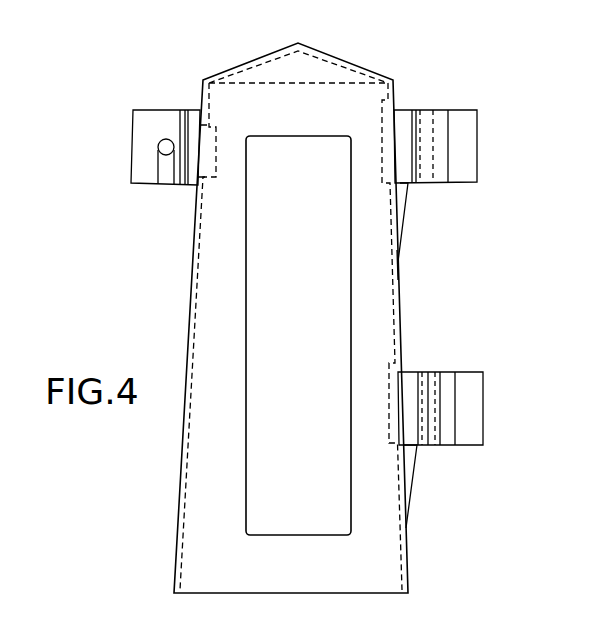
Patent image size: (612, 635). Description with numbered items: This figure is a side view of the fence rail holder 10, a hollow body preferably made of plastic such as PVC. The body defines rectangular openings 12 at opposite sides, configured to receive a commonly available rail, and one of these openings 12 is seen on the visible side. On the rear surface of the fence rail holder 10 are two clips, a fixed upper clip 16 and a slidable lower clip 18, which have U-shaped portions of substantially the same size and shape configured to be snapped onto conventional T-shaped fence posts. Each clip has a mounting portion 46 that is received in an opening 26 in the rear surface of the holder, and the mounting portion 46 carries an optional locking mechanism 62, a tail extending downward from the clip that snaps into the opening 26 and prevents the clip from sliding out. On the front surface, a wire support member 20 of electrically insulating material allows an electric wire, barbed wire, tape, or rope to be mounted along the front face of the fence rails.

The fence rail holder 10 is at (399, 294).
The rectangular opening 12 is at (347, 517).
The fixed upper clip 16 is at (474, 127).
The slidable lower clip 18 is at (475, 390).
The wire support member 20 is at (150, 122).
The opening 26 is at (398, 268).
The mounting portion 46 is at (373, 126).
The locking mechanism 62 is at (403, 202).